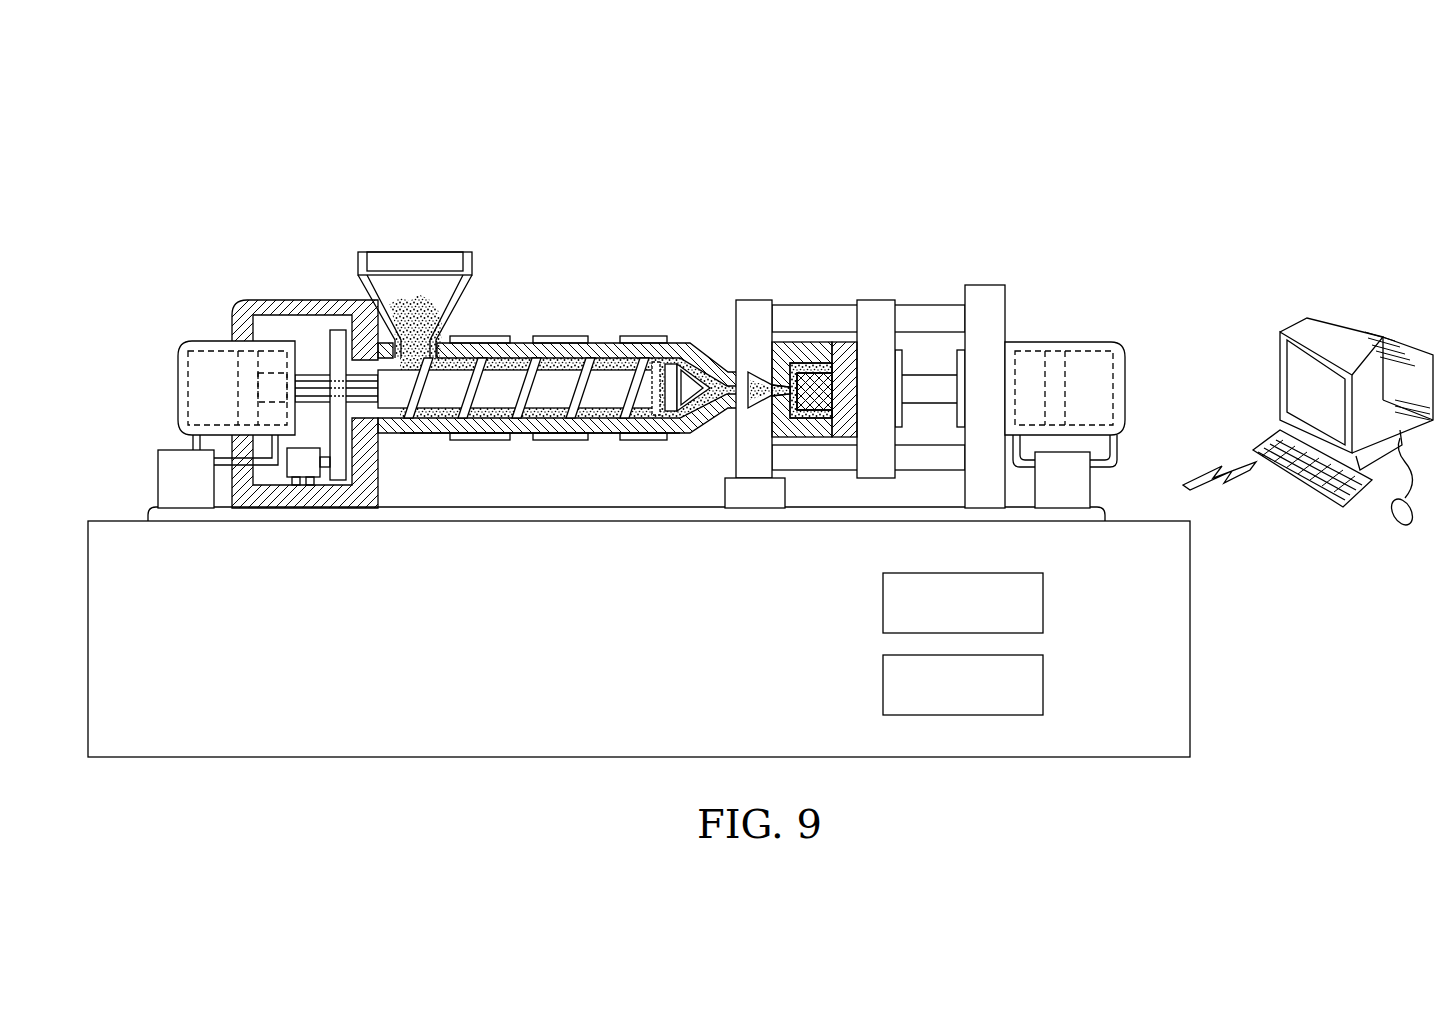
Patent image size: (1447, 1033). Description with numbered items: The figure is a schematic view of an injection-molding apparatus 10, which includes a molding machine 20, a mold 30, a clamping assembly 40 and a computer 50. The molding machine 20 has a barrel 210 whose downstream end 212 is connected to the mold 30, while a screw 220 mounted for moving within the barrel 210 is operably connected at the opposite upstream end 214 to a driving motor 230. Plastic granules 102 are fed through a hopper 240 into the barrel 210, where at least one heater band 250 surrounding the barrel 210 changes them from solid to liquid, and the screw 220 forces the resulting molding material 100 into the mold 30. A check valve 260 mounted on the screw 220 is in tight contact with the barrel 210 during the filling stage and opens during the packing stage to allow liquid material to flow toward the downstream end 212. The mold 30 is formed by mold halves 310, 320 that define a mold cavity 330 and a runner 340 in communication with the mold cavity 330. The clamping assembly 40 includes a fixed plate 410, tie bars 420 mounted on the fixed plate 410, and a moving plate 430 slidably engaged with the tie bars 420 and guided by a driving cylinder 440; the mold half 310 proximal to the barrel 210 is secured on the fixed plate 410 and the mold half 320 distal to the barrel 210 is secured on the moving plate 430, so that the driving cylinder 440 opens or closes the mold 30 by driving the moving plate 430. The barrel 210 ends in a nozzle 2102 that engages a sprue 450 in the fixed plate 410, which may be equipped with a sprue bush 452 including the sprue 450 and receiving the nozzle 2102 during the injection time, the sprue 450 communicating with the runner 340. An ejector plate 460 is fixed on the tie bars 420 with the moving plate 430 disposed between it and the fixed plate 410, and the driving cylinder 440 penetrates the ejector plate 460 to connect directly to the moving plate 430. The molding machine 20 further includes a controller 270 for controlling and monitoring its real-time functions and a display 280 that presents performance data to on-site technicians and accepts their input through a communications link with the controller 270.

The injection-molding apparatus 10 is at (108, 87).
The molding machine 20 is at (158, 520).
The mold 30 is at (860, 205).
The clamping assembly 40 is at (1108, 242).
The computer 50 is at (1320, 325).
The molding material 100 is at (679, 345).
The plastic granules 102 is at (414, 300).
The barrel 210 is at (529, 343).
The downstream end 212 is at (728, 418).
The upstream end 214 is at (398, 431).
The screw 220 is at (601, 390).
The driving motor 230 is at (205, 340).
The hopper 240 is at (358, 266).
The heater band 250 is at (556, 338).
The check valve 260 is at (655, 416).
The controller 270 is at (1043, 686).
The display 280 is at (1043, 603).
The nozzle 2102 is at (732, 366).
The mold half 310 is at (789, 350).
The mold half 320 is at (844, 345).
The mold cavity 330 is at (822, 418).
The runner 340 is at (778, 418).
The fixed plate 410 is at (753, 313).
The tie bars 420 is at (931, 318).
The moving plate 430 is at (876, 312).
The driving cylinder 440 is at (1080, 345).
The sprue 450 is at (742, 478).
The sprue bush 452 is at (760, 408).
The ejector plate 460 is at (985, 300).